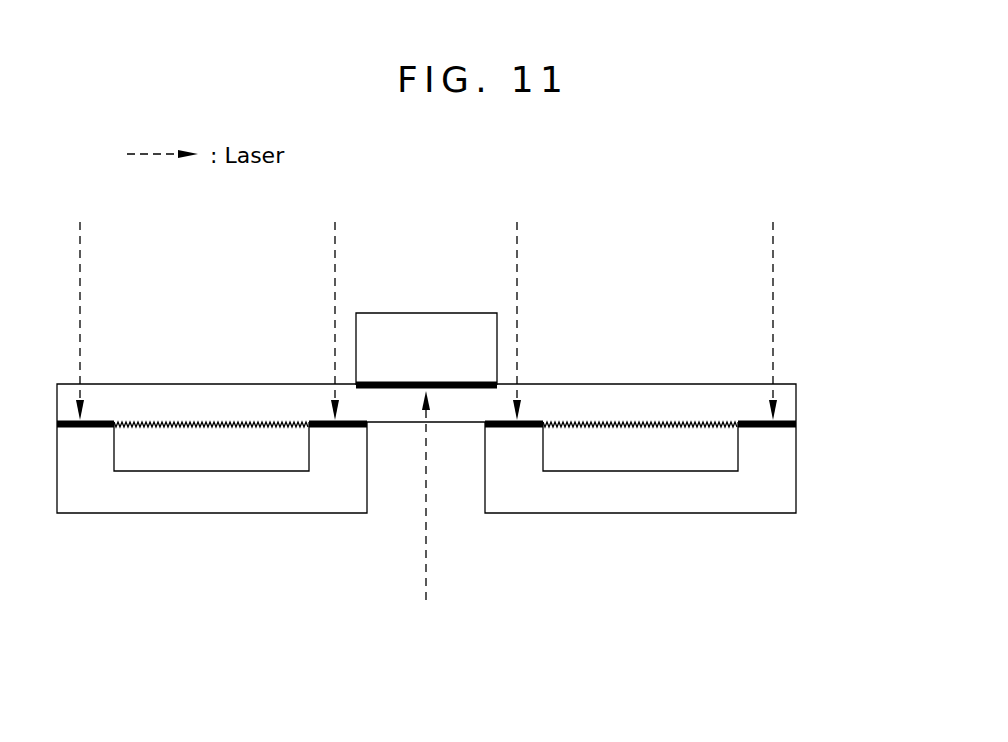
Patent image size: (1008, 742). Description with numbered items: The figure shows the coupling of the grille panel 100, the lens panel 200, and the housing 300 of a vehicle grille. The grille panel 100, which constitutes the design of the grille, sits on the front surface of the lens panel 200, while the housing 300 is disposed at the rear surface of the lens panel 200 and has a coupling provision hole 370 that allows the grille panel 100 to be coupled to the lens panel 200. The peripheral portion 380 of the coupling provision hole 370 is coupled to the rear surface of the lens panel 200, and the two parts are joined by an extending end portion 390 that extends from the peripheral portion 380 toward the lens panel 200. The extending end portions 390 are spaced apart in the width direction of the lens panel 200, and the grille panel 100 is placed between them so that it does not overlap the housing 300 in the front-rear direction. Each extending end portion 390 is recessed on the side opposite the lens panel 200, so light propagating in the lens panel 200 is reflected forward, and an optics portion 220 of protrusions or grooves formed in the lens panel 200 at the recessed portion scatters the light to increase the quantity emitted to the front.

The grille panel 100 is at (420, 316).
The lens panel 200 is at (165, 392).
The optics portion 220 is at (615, 425).
The housing 300 is at (205, 495).
The coupling provision hole 370 is at (463, 493).
The peripheral portion 380 is at (85, 468).
The extending end portion 390 is at (772, 440).